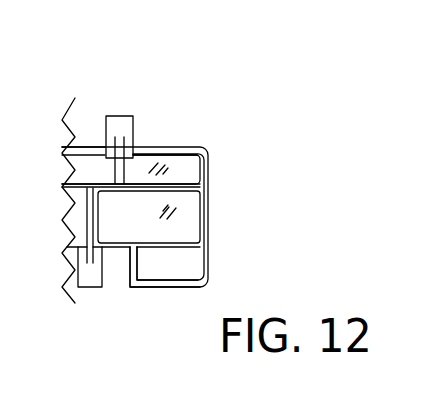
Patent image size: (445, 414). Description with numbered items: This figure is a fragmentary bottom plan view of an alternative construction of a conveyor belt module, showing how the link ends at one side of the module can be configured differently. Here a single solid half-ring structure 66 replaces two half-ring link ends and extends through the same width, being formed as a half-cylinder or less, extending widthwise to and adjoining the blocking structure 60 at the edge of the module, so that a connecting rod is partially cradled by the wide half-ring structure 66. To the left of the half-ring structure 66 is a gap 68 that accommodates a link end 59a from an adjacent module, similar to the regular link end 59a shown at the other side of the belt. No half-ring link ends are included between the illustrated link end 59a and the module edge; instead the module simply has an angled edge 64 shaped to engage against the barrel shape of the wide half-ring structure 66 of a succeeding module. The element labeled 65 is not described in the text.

The link end 59a is at (127, 116).
The blocking structure 60 is at (209, 272).
The angled edge 64 is at (81, 147).
The piston 65 is at (166, 182).
The half-ring structure 66 is at (158, 288).
The gap 68 is at (112, 288).